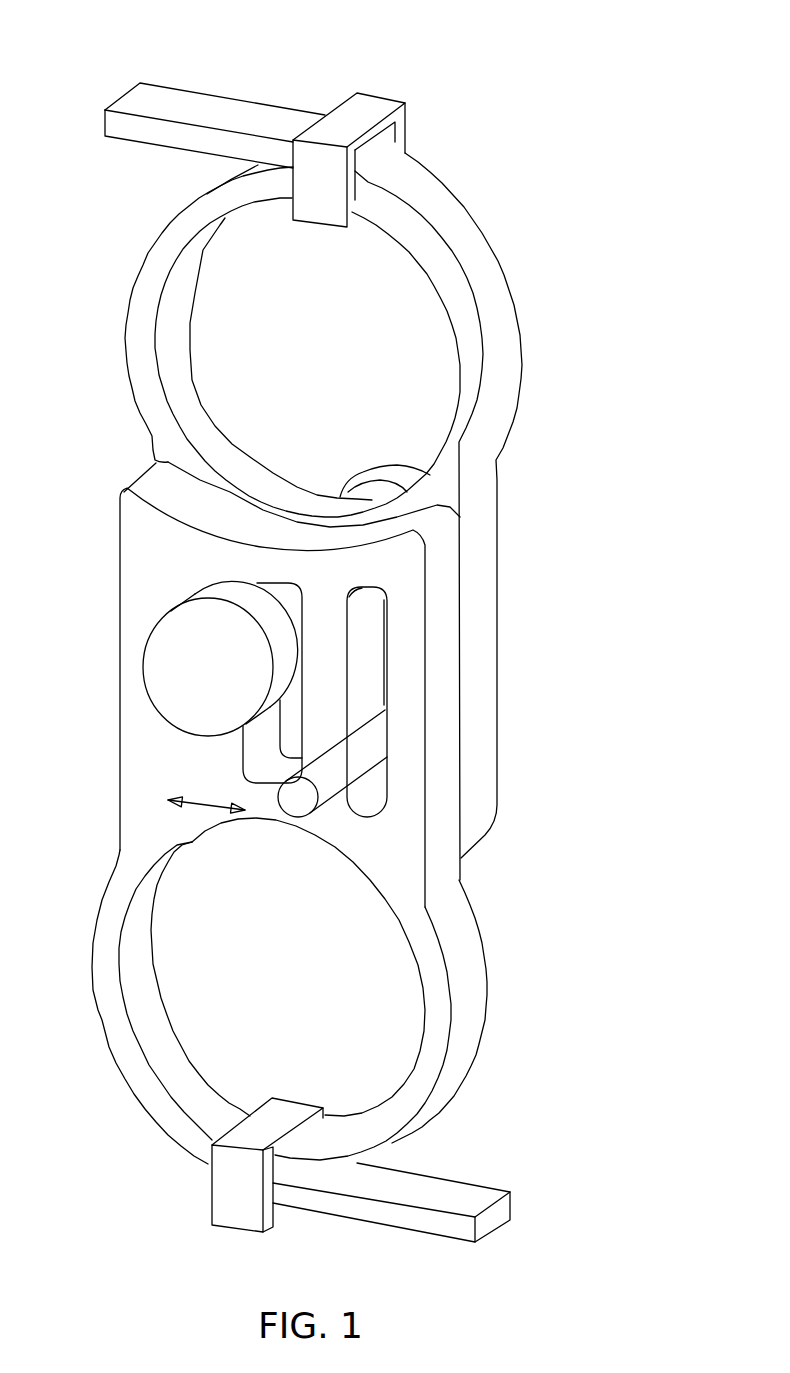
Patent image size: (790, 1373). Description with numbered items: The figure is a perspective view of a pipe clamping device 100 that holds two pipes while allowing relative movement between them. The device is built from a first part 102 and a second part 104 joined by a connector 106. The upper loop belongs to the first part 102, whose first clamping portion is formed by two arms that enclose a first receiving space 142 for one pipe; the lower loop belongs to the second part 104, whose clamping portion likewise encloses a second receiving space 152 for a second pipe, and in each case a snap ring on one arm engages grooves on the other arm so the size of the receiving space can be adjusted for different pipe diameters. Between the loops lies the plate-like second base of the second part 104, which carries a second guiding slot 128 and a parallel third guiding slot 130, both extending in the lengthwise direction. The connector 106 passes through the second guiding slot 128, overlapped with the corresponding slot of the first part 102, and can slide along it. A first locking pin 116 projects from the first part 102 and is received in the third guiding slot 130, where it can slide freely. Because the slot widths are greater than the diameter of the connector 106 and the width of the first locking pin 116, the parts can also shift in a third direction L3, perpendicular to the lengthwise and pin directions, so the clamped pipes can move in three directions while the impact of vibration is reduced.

The pipe clamping device 100 is at (372, 624).
The first part 102 is at (341, 481).
The second part 104 is at (313, 852).
The connector 106 is at (155, 657).
The first locking pin 116 is at (360, 748).
The second guiding slot 128 is at (253, 750).
The third guiding slot 130 is at (360, 665).
The first receiving space 142 is at (300, 354).
The second receiving space 152 is at (262, 996).
The third direction L3 is at (206, 795).